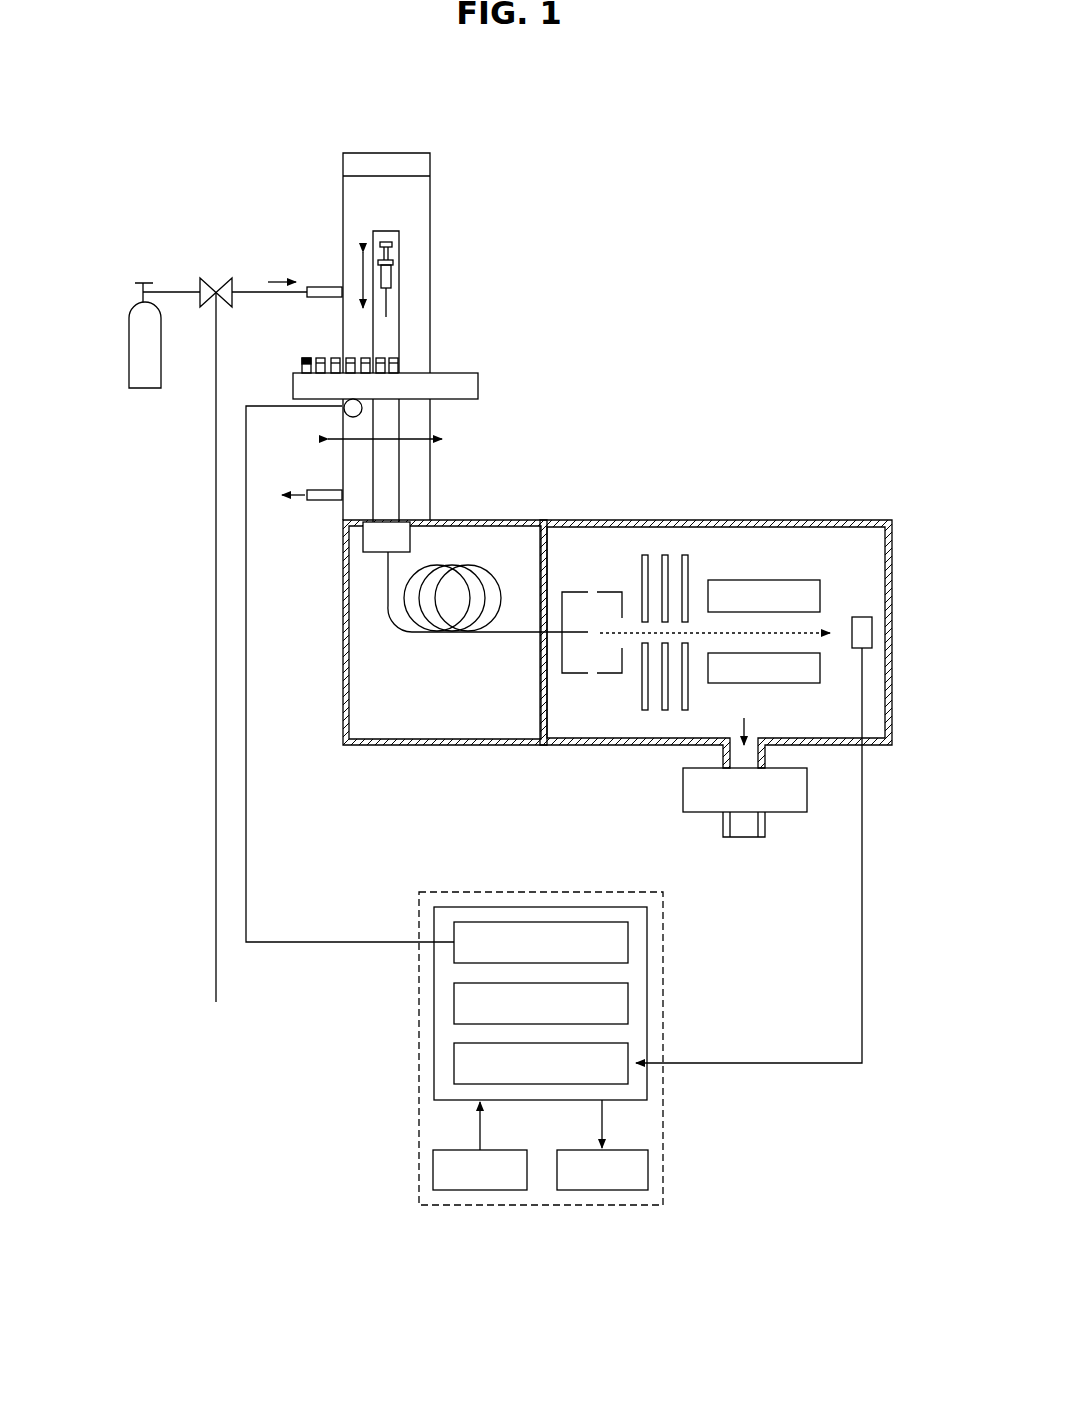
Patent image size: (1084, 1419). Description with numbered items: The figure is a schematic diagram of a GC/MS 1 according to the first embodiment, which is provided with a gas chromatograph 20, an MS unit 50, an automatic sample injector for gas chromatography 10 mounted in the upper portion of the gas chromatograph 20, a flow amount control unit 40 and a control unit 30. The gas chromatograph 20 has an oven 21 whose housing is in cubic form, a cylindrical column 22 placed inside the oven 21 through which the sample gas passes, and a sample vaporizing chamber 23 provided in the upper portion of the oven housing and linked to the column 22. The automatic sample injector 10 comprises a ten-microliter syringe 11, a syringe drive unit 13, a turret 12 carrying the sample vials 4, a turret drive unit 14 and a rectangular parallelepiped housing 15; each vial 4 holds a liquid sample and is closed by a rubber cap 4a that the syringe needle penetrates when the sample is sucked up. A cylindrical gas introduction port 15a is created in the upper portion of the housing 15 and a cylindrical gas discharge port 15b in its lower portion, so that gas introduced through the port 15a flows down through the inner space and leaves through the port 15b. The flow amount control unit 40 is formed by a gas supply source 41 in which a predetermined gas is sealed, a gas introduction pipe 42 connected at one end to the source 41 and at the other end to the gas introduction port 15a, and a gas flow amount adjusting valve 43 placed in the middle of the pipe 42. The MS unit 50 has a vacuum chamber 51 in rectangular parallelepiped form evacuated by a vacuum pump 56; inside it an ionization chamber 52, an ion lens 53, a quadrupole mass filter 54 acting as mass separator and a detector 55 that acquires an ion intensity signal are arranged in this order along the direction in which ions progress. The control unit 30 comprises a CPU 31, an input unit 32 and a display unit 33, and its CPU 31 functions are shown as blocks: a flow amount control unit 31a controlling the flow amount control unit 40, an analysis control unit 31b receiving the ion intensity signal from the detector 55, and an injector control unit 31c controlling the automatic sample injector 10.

The GC/MS 1 is at (708, 198).
The sample vial 4 is at (328, 340).
The cap 4a is at (303, 357).
The automatic sample injector for gas chromatography 10 is at (487, 318).
The syringe 11 is at (395, 272).
The turret 12 is at (480, 388).
The syringe drive unit 13 is at (430, 467).
The turret drive unit 14 is at (362, 406).
The housing 15 is at (415, 201).
The gas introduction port 15a is at (325, 287).
The gas discharge port 15b is at (318, 490).
The gas chromatograph 20 is at (328, 662).
The oven 21 is at (388, 748).
The column 22 is at (507, 636).
The sample vaporizing chamber 23 is at (363, 533).
The control unit 30 is at (452, 892).
The CPU 31 is at (540, 907).
The flow amount control unit 31a is at (628, 1000).
The analysis control unit 31b is at (454, 1060).
The injector control unit 31c is at (628, 940).
The input unit 32 is at (480, 1190).
The display unit 33 is at (602, 1190).
The flow amount control unit 40 is at (173, 260).
The gas supply source 41 is at (145, 390).
The gas introduction pipe 42 is at (262, 290).
The gas flow amount adjusting valve 43 is at (226, 278).
The MS unit 50 is at (618, 470).
The vacuum chamber 51 is at (712, 520).
The ionization chamber 52 is at (575, 592).
The ion lens 53 is at (685, 555).
The quadrupole mass filter 54 is at (762, 580).
The detector 55 is at (862, 617).
The vacuum pump 56 is at (683, 785).